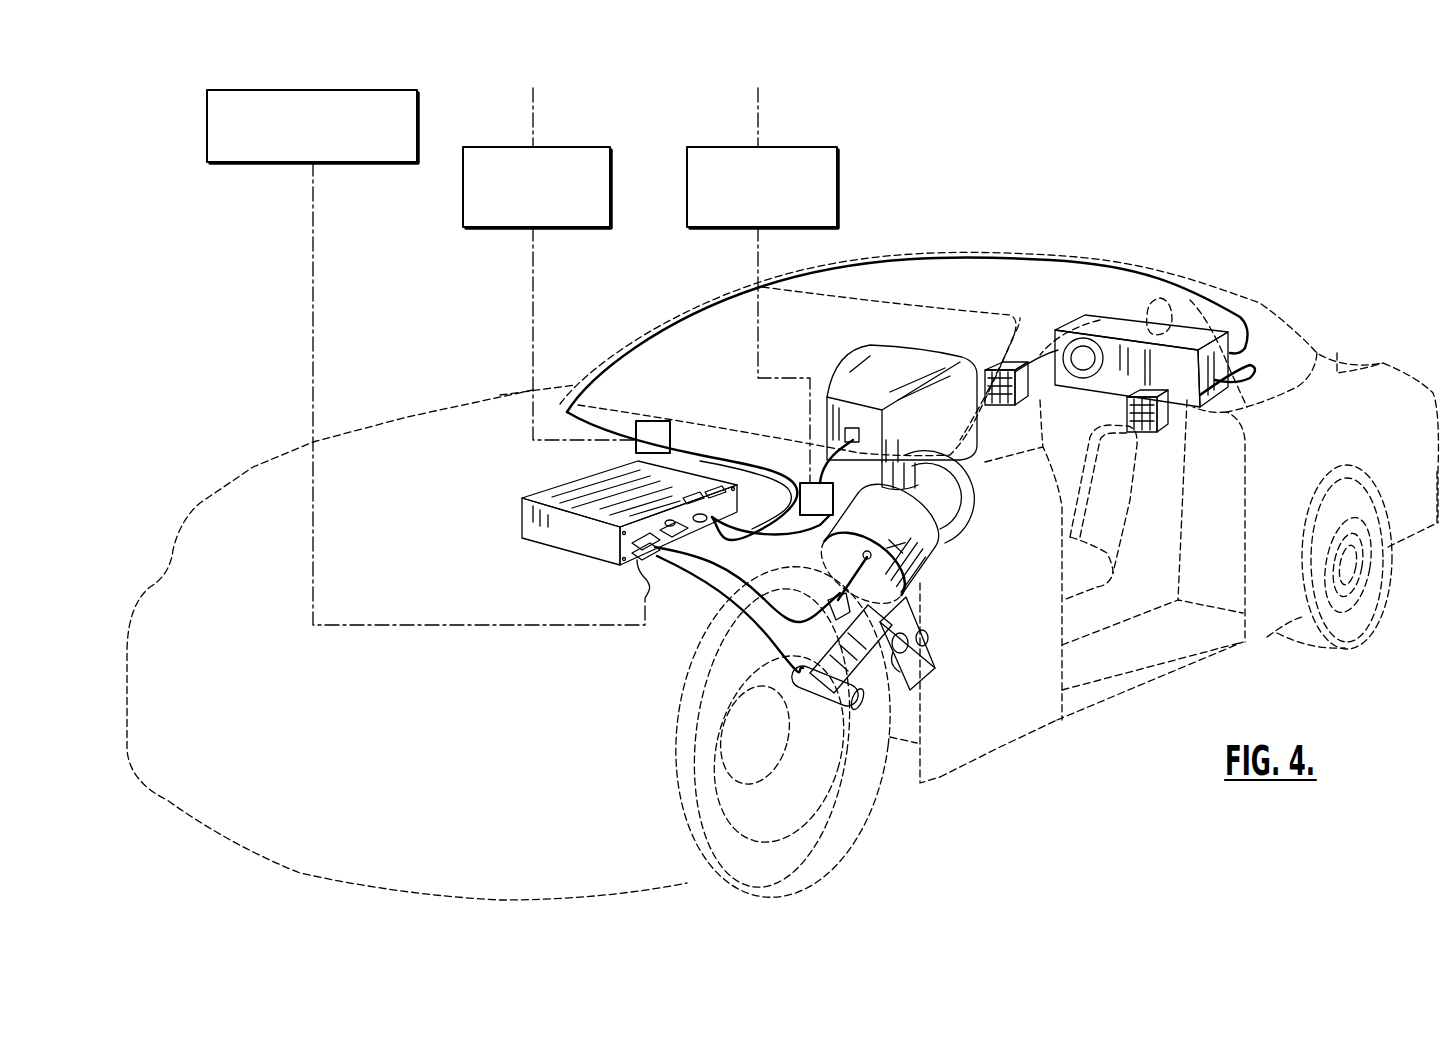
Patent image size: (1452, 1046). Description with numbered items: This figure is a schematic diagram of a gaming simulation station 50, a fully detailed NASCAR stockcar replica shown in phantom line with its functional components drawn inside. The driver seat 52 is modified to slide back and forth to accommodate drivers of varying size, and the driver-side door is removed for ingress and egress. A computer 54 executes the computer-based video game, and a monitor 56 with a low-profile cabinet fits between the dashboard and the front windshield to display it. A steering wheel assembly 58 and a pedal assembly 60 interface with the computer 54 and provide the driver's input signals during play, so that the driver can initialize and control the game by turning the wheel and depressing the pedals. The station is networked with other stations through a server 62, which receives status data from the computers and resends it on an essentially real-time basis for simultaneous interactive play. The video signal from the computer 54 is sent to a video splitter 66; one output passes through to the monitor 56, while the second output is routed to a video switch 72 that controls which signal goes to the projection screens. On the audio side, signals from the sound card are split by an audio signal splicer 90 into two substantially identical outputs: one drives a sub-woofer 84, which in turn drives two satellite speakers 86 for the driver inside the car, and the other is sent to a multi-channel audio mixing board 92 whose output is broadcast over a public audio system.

The gaming simulation station 50 is at (1252, 283).
The driver seat 52 is at (1098, 527).
The computer 54 is at (569, 530).
The monitor 56 is at (899, 353).
The steering wheel assembly 58 is at (967, 521).
The pedal assembly 60 is at (913, 608).
The server 62 is at (337, 90).
The video splitter 66 is at (823, 527).
The video switch 72 is at (838, 185).
The sub-woofer 84 is at (1113, 382).
The satellite speakers 86 is at (1002, 368).
The audio signal splicer 90 is at (670, 435).
The audio mixing board 92 is at (463, 197).